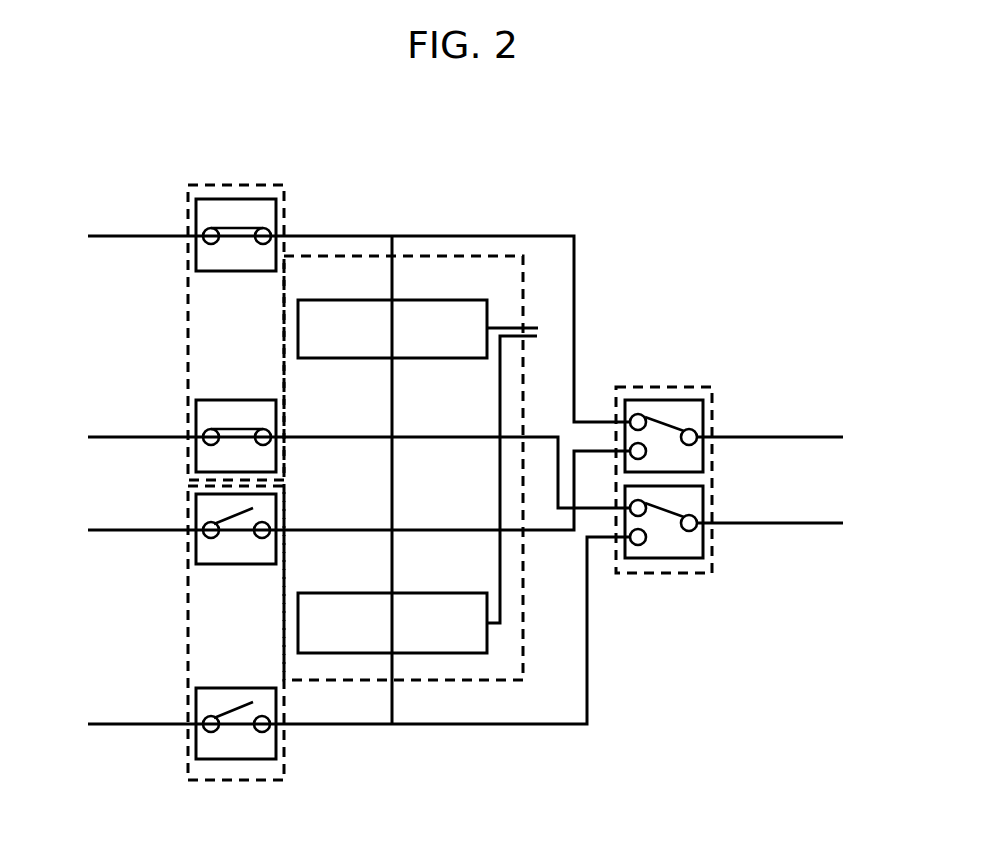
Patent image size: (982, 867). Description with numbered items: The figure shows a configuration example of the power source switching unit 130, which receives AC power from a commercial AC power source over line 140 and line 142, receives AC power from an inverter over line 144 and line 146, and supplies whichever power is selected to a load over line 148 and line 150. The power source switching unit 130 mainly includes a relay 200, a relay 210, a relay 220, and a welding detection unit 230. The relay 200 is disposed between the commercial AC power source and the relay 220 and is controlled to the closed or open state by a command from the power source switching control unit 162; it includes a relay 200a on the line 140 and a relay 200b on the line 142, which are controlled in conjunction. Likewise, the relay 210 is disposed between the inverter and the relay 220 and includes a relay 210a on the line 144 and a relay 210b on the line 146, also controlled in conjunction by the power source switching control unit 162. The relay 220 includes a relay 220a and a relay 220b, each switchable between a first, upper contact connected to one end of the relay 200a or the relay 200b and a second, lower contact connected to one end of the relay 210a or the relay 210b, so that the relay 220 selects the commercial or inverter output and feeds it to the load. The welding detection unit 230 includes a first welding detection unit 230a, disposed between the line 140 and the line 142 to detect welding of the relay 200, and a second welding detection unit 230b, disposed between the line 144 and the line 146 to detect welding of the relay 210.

The power source switching unit 130 is at (880, 805).
The line 140 is at (335, 322).
The line 142 is at (335, 465).
The line 144 is at (335, 497).
The line 146 is at (335, 637).
The line 148 is at (790, 437).
The line 150 is at (790, 523).
The power source switching control unit 162 is at (531, 471).
The relay 200 is at (234, 322).
The relay 200a is at (195, 220).
The relay 200b is at (190, 420).
The relay 210 is at (235, 640).
The relay 210a is at (195, 517).
The relay 210b is at (190, 710).
The relay 220 is at (699, 459).
The relay 220a is at (708, 420).
The relay 220b is at (708, 507).
The welding detection unit 230 is at (414, 488).
The first welding detection unit 230a is at (372, 300).
The second welding detection unit 230b is at (372, 593).